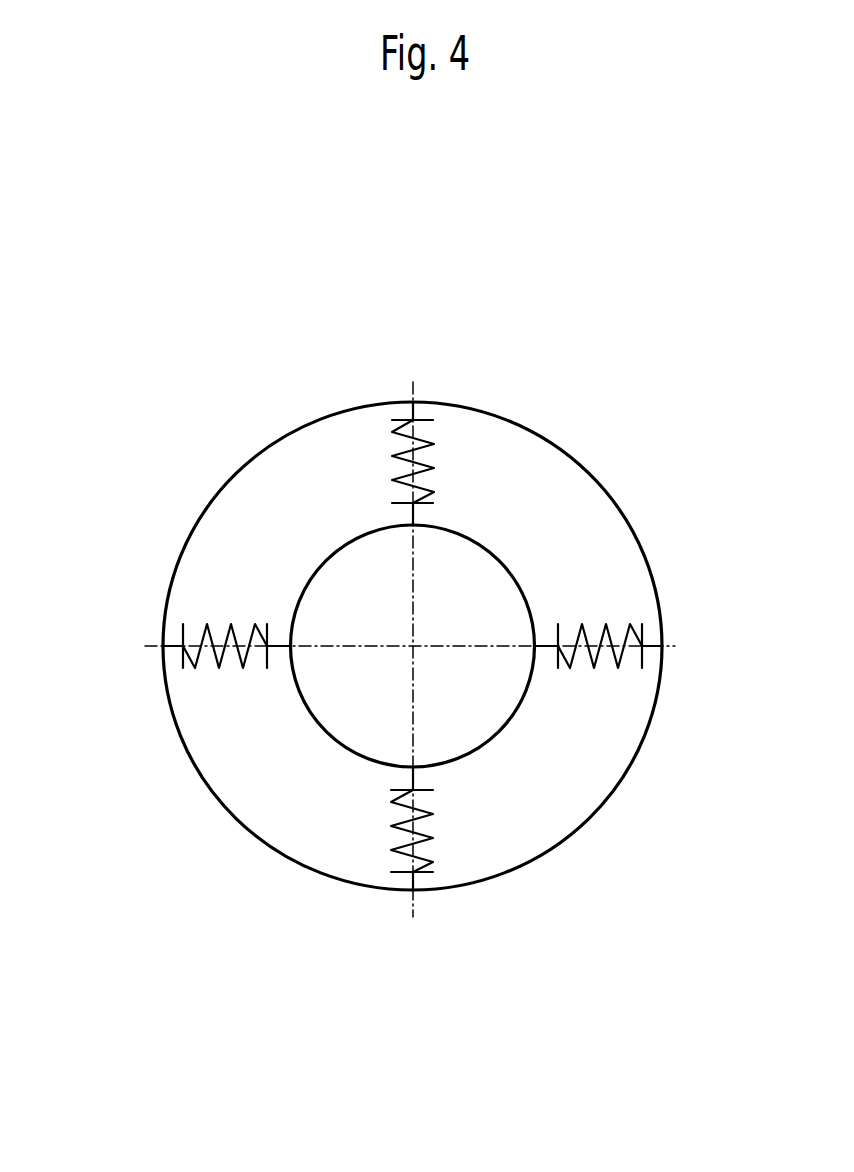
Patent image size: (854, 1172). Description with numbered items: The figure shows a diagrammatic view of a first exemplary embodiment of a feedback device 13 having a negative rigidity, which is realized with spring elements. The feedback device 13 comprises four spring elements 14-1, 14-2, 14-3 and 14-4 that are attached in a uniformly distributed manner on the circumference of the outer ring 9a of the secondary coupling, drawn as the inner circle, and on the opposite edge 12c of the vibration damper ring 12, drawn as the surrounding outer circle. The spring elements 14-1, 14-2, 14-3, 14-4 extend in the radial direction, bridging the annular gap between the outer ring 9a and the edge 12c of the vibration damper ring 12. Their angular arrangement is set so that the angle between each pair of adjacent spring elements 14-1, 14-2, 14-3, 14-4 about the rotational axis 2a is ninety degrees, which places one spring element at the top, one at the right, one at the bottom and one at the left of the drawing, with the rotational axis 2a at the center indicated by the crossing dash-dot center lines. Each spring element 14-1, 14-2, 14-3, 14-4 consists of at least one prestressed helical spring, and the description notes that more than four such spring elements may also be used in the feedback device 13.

The feedback device 13 is at (295, 400).
The vibration damper ring 12 is at (523, 430).
The edge of the vibration damper ring 12c is at (412, 646).
The outer ring of the secondary coupling 9a is at (483, 597).
The rotational axis 2a is at (412, 648).
The spring element 14-1 is at (432, 440).
The spring element 14-2 is at (607, 628).
The spring element 14-3 is at (423, 873).
The spring element 14-4 is at (218, 668).